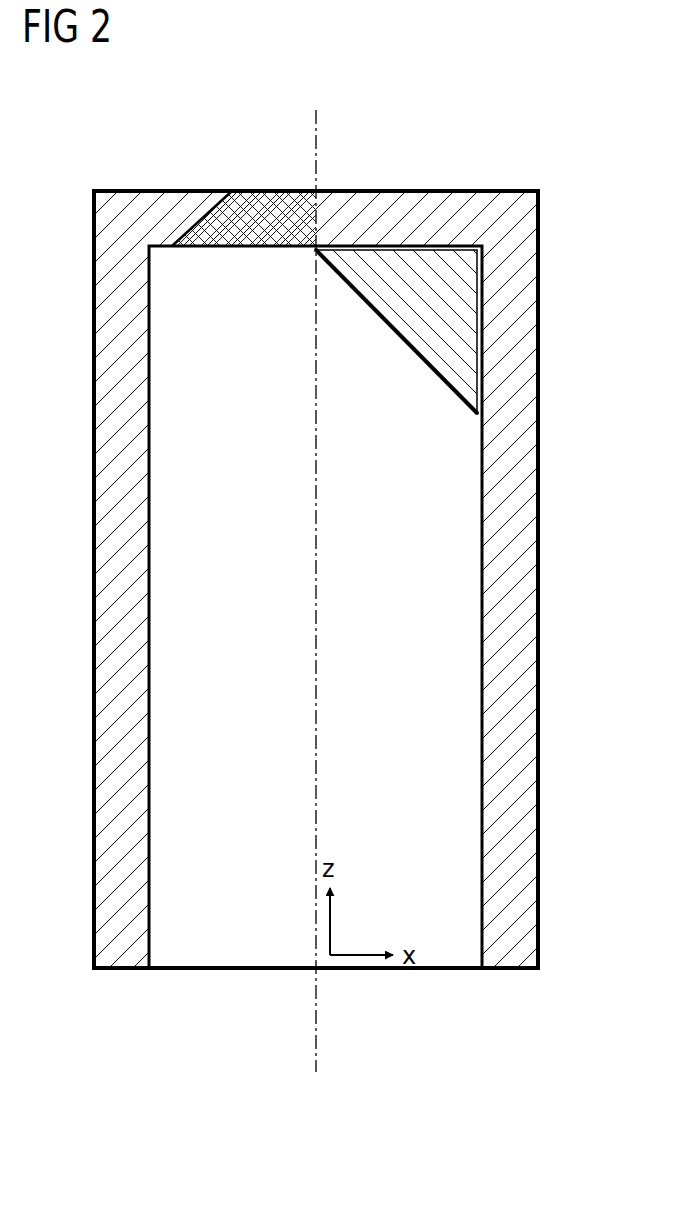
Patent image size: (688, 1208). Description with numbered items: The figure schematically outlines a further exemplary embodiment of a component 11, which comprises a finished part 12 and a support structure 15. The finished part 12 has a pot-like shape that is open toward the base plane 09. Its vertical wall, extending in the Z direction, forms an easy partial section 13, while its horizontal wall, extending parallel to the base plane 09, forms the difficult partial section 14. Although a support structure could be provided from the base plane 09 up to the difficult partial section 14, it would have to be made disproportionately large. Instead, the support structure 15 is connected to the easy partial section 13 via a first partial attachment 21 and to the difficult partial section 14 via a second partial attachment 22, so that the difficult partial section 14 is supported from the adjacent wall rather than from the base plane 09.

The component 11 is at (490, 151).
The finished part 12 is at (105, 600).
The easy partial section 13 is at (146, 200).
The difficult partial section 14 is at (272, 200).
The support structure 15 is at (415, 322).
The first partial attachment 21 is at (476, 419).
The second partial attachment 22 is at (311, 251).
The base plane 09 is at (215, 970).